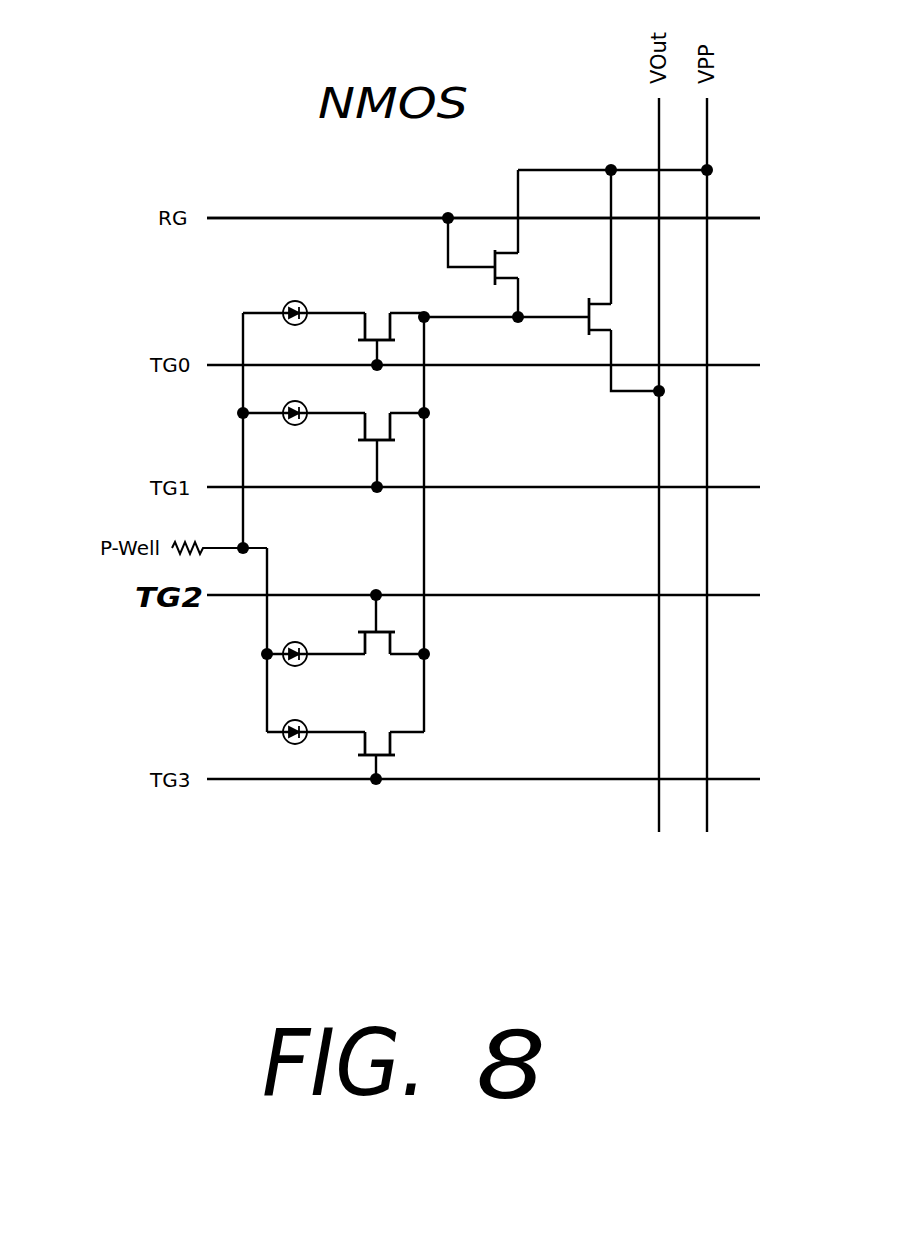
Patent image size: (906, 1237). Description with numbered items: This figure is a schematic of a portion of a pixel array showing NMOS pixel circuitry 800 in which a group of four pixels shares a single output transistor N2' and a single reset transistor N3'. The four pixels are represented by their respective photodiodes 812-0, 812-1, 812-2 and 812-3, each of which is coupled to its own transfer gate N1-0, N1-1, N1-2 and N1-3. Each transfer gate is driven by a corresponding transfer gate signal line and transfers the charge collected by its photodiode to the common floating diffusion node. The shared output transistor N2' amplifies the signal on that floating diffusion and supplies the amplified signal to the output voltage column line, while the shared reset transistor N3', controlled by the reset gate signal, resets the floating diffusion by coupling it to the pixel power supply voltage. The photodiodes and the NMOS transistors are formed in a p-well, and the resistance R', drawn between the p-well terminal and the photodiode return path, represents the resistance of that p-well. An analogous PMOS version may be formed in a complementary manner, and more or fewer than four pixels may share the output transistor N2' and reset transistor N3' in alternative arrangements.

The NMOS pixel circuitry 800 is at (120, 213).
The photodiode 812-0 is at (284, 304).
The photodiode 812-1 is at (284, 404).
The photodiode 812-2 is at (296, 643).
The photodiode 812-3 is at (296, 719).
The transfer gate N1-0 is at (381, 314).
The transfer gate N1-1 is at (381, 411).
The transfer gate N1-2 is at (385, 658).
The transfer gate N1-3 is at (379, 731).
The output transistor N2' is at (624, 317).
The reset transistor N3' is at (530, 267).
The resistance R' is at (218, 528).